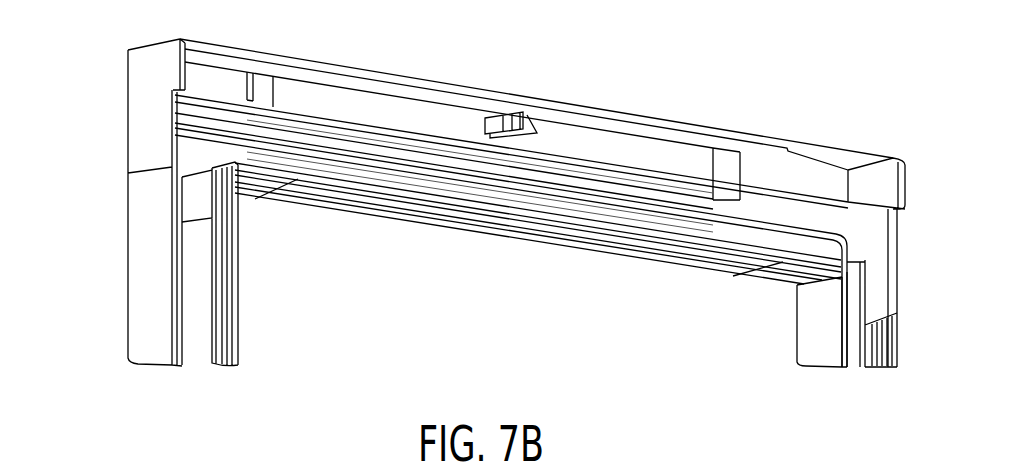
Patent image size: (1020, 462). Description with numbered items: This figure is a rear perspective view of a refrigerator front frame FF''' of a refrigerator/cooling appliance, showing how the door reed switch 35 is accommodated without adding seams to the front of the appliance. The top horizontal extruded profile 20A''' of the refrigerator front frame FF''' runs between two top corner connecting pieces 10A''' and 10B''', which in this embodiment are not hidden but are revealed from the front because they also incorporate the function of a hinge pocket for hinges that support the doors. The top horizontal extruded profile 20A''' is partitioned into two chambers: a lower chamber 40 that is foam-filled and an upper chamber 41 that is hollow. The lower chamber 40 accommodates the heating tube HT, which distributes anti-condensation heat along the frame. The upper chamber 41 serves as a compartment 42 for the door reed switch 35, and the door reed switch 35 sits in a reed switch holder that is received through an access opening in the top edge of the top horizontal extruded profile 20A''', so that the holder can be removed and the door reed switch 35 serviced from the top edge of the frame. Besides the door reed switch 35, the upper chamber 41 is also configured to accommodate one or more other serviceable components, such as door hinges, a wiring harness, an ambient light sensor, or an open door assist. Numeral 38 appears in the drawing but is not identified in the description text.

The top corner connecting piece 10A''' is at (121, 202).
The top corner connecting piece 10B''' is at (879, 239).
The top horizontal extruded profile 20A''' is at (536, 102).
The upper chamber 41 is at (340, 100).
The compartment 42 is at (592, 133).
The bracket 38 is at (492, 110).
The door reed switch 35 is at (526, 126).
The lower chamber 40 is at (442, 190).
The heating tube HT is at (615, 205).
The refrigerator front frame FF''' is at (473, 264).